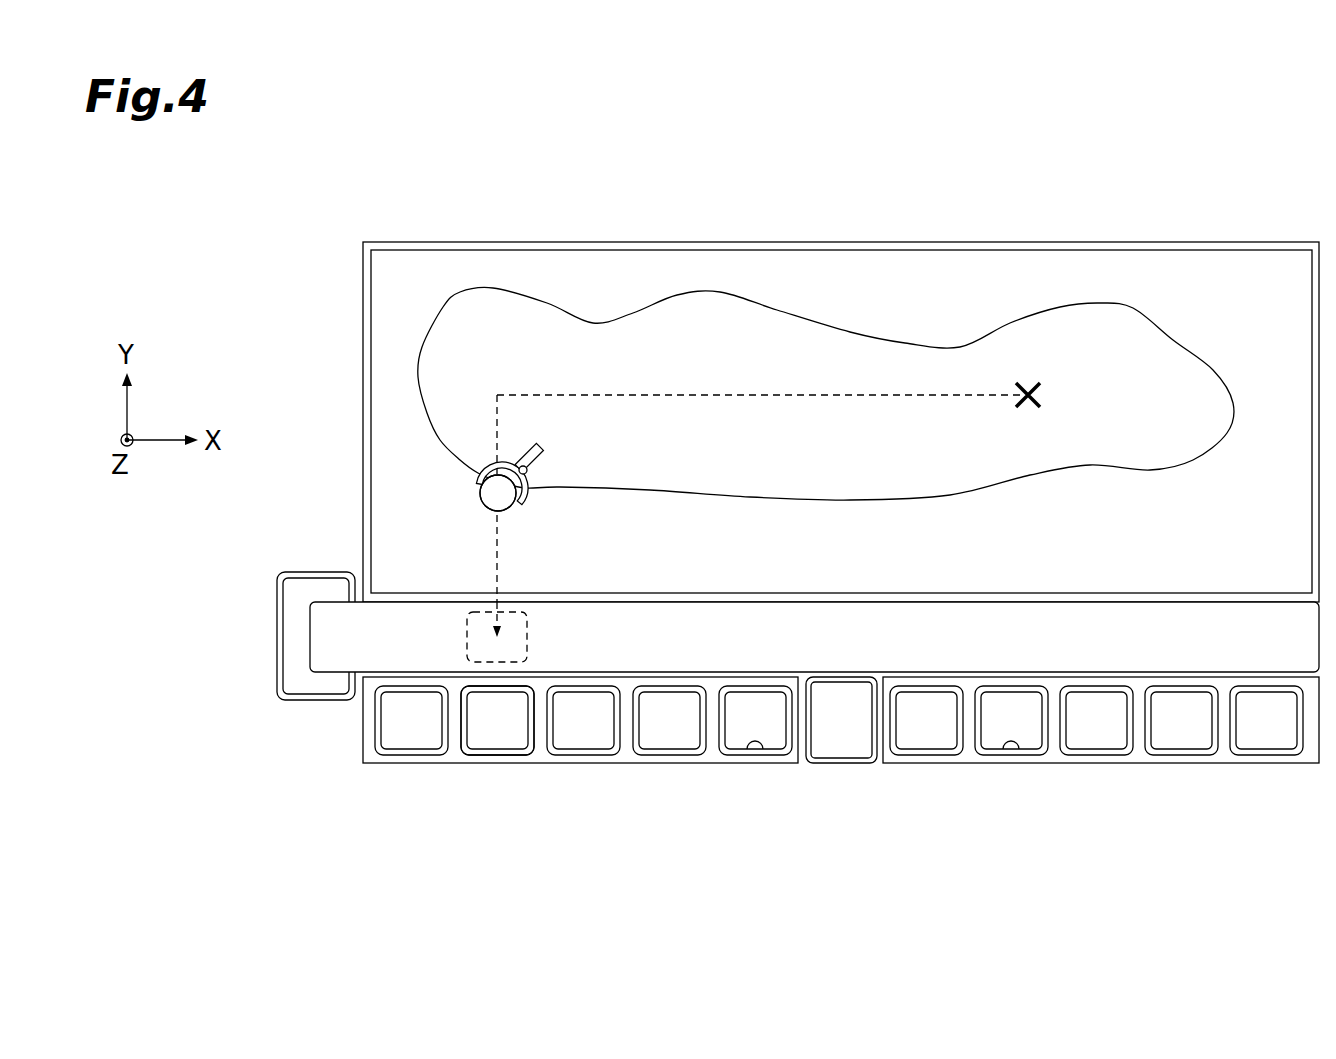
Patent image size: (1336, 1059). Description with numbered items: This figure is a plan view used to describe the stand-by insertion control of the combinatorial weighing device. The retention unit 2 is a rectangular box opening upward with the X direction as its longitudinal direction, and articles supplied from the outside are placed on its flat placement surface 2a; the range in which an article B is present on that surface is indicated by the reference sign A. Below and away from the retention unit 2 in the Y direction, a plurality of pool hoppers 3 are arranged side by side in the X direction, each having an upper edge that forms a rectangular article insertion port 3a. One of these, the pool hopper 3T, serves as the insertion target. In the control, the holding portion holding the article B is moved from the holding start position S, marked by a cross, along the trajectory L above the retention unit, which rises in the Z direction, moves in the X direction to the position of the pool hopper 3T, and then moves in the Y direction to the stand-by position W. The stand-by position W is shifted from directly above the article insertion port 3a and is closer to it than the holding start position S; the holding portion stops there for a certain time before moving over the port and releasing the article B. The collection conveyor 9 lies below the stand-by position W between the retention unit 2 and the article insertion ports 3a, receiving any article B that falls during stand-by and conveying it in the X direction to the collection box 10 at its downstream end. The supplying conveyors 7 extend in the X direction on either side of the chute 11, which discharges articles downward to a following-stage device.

The retention unit 2 is at (574, 236).
The placement surface 2a is at (636, 270).
The pool hopper 3 is at (555, 472).
The article insertion port 3a is at (522, 505).
The pool hopper serving as insertion target 3T is at (490, 757).
The supplying conveyor 7 is at (363, 744).
The collection conveyor 9 is at (338, 622).
The collection box 10 is at (277, 636).
The chute 11 is at (840, 758).
The range in which article is present A is at (1132, 305).
The article B is at (488, 494).
The trajectory above the retention unit L is at (735, 392).
The holding start position S is at (1030, 385).
The stand-by position W is at (466, 637).